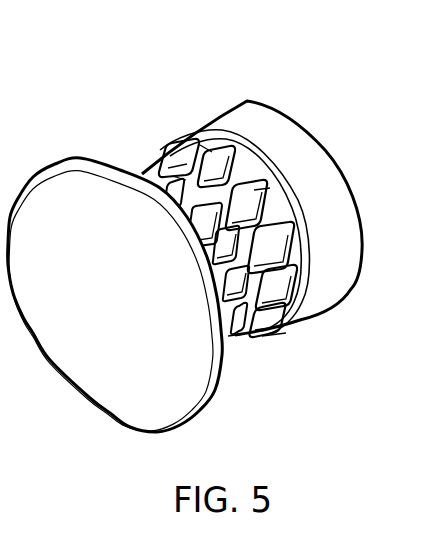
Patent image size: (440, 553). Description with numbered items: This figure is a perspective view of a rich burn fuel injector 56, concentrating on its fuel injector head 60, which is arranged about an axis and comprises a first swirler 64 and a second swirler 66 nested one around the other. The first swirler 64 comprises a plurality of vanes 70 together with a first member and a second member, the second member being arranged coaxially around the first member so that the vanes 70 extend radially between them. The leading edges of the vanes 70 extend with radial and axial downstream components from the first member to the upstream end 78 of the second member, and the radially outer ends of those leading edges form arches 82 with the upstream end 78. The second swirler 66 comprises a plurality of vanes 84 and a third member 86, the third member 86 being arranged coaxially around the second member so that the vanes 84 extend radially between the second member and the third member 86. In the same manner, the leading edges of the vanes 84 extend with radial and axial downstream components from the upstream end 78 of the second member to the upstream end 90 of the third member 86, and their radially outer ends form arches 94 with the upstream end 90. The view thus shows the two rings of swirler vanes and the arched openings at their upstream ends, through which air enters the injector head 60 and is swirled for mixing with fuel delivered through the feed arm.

The fuel injector 56 is at (210, 226).
The fuel injector head 60 is at (264, 232).
The first swirler 64 is at (237, 335).
The second swirler 66 is at (278, 336).
The vanes 70 is at (162, 203).
The upstream end 78 is at (225, 221).
The arches 82 is at (245, 245).
The vanes 84 is at (180, 183).
The third member 86 is at (233, 118).
The upstream end 90 is at (207, 150).
The arches 94 is at (262, 196).